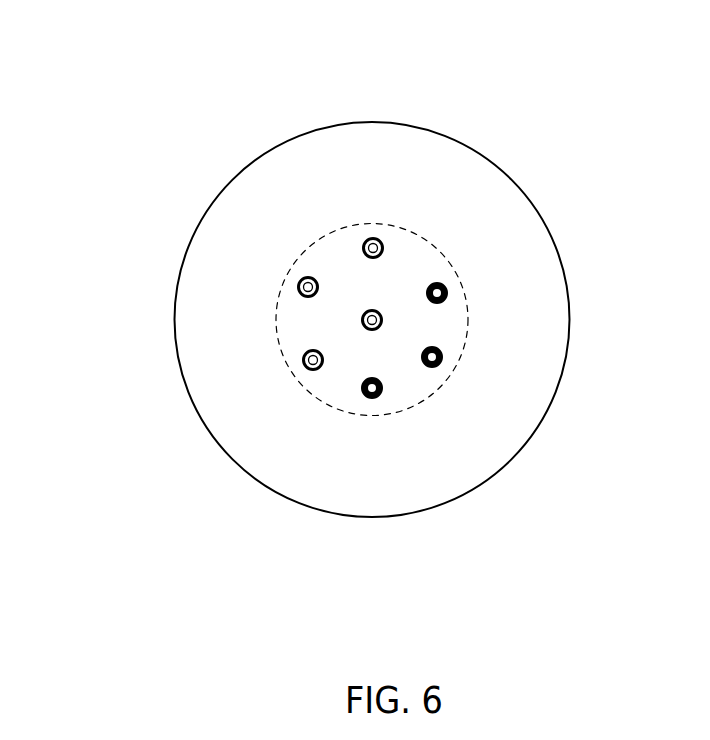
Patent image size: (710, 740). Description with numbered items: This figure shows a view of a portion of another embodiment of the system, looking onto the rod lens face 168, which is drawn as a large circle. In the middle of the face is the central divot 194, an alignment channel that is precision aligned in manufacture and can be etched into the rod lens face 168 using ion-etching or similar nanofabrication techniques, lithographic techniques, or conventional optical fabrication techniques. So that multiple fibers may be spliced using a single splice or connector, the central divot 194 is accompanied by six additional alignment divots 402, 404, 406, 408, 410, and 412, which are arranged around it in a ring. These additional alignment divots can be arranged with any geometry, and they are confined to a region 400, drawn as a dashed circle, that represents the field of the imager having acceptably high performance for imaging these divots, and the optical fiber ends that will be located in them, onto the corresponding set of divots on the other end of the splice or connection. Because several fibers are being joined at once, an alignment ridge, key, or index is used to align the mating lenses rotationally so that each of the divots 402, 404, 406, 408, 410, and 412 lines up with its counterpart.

The rod lens face 168 is at (402, 381).
The region 400 is at (434, 244).
The alignment divot 402 is at (403, 138).
The alignment divot 404 is at (548, 253).
The alignment divot 406 is at (526, 417).
The alignment divot 408 is at (308, 489).
The alignment divot 410 is at (210, 419).
The alignment divot 412 is at (191, 247).
The central divot 194 is at (530, 349).